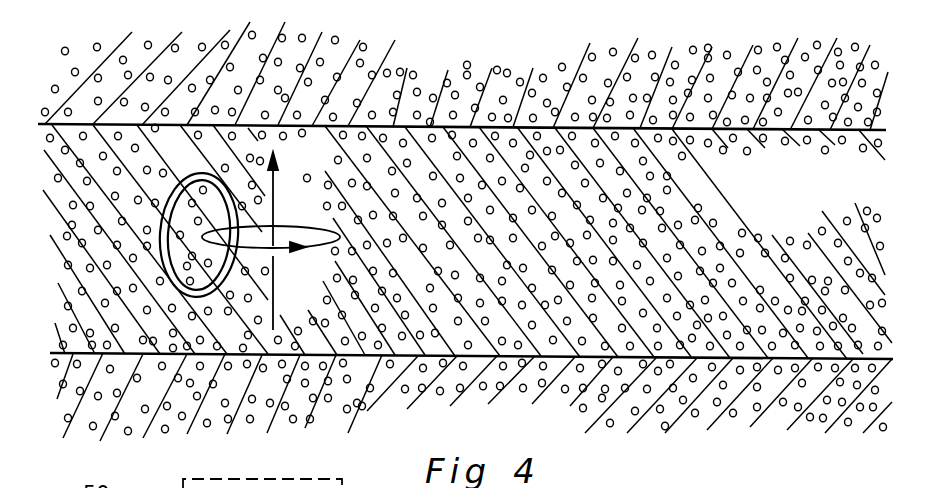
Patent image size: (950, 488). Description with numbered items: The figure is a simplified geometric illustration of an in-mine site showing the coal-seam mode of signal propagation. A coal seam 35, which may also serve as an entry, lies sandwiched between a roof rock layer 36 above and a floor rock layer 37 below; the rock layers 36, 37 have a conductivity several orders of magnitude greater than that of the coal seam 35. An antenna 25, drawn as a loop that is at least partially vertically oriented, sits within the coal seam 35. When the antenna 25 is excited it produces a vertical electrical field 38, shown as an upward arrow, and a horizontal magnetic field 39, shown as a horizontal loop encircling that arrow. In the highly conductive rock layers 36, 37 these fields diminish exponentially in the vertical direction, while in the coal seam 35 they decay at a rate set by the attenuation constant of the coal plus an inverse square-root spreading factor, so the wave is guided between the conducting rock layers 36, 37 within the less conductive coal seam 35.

The antenna 25 is at (184, 176).
The coal seam 35 is at (794, 207).
The roof rock layer 36 is at (558, 61).
The floor rock layer 37 is at (555, 443).
The vertical electrical field 38 is at (279, 177).
The horizontal magnetic field 39 is at (280, 254).